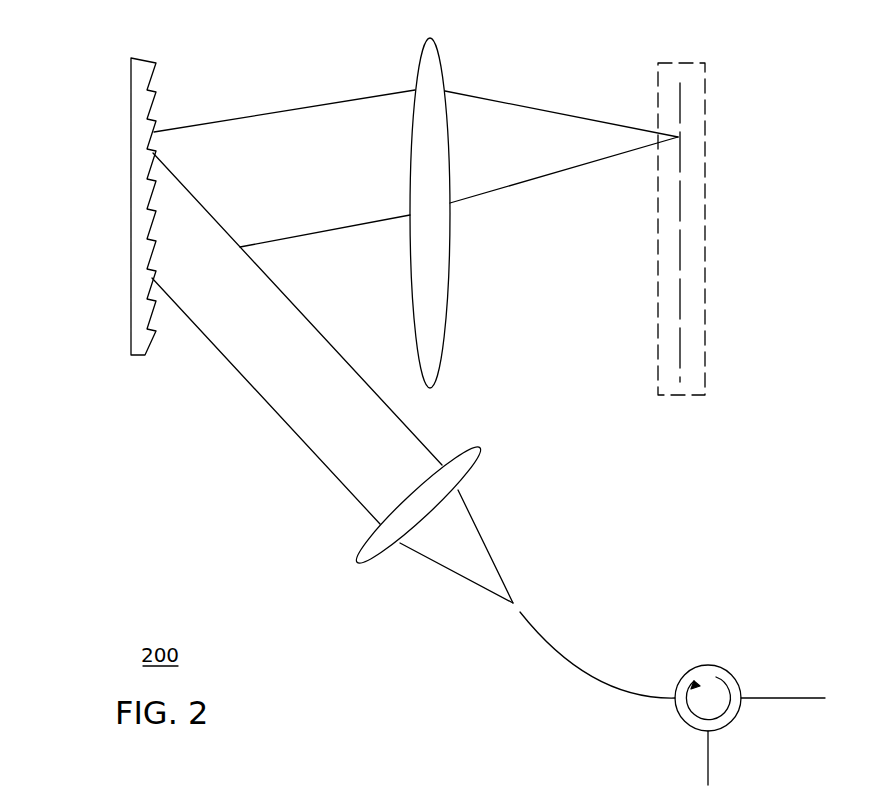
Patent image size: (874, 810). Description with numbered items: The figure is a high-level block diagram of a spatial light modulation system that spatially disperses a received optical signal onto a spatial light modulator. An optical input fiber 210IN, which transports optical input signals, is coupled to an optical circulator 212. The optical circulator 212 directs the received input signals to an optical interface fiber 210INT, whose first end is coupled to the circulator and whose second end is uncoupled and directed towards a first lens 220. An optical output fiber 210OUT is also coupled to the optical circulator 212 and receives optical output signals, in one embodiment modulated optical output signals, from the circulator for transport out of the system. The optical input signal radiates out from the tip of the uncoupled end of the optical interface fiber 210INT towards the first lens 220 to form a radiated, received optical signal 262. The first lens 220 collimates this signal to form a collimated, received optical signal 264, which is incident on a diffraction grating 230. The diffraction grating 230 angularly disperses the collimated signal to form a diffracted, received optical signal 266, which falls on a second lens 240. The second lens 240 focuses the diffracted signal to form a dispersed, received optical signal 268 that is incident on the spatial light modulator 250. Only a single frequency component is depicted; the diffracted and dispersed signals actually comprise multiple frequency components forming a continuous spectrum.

The optical interface fiber 210INT is at (547, 642).
The optical input fiber 210IN is at (797, 700).
The optical output fiber 210OUT is at (708, 765).
The optical circulator 212 is at (727, 668).
The first lens 220 is at (482, 450).
The diffraction grating 230 is at (130, 80).
The second lens 240 is at (446, 350).
The spatial light modulator 250 is at (671, 397).
The radiated, received optical signal 262 is at (466, 507).
The collimated, received optical signal 264 is at (265, 400).
The diffracted, received optical signal 266 is at (337, 102).
The dispersed, received optical signal 268 is at (514, 105).